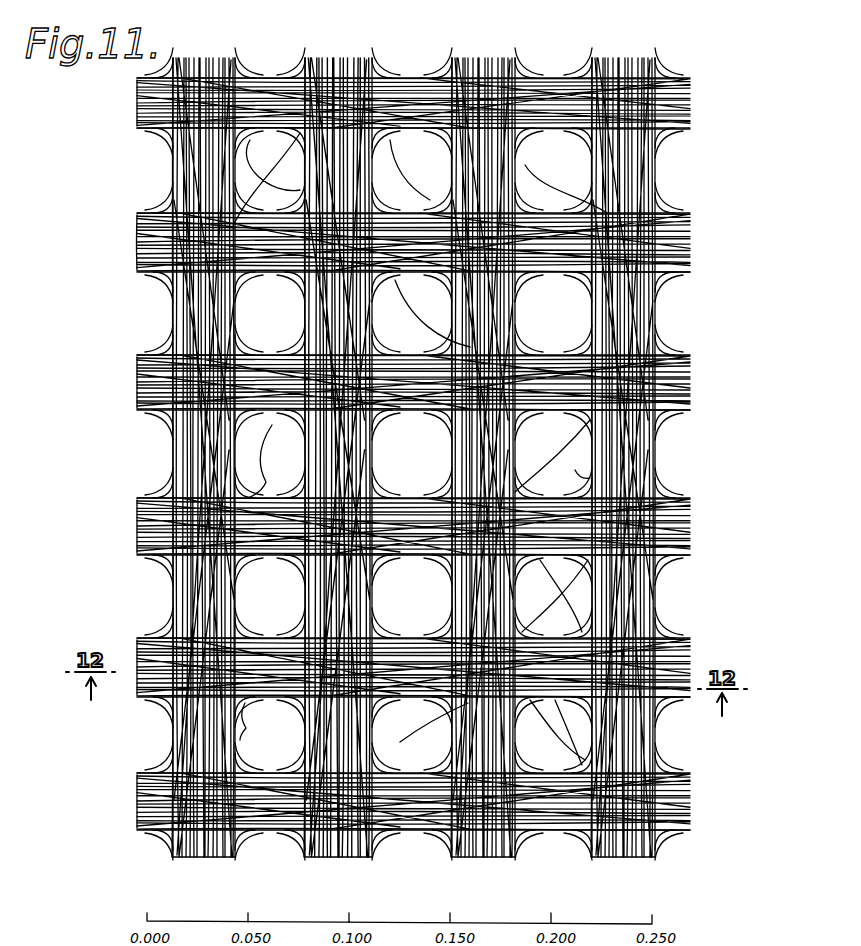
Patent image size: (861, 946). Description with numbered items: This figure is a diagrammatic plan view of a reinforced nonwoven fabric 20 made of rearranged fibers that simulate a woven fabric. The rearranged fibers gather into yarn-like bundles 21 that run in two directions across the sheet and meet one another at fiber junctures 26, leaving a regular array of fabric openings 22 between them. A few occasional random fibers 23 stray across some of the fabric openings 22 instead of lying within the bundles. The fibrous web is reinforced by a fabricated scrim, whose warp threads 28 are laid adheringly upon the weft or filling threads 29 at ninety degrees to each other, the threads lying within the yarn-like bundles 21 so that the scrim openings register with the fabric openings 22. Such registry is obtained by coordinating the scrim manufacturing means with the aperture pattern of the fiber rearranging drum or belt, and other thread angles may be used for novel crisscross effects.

The reinforced nonwoven fabric 20 is at (705, 143).
The yarn-like bundles 21 is at (177, 167).
The fabric openings 22 is at (590, 326).
The occasional random fibers 23 is at (565, 200).
The fiber junctures 26 is at (690, 248).
The warp threads 28 is at (183, 853).
The weft or filling threads 29 is at (137, 520).